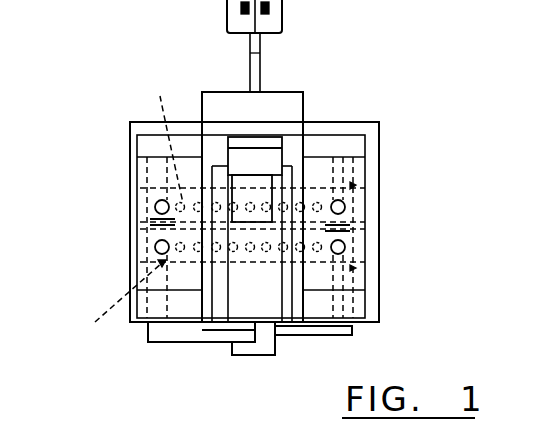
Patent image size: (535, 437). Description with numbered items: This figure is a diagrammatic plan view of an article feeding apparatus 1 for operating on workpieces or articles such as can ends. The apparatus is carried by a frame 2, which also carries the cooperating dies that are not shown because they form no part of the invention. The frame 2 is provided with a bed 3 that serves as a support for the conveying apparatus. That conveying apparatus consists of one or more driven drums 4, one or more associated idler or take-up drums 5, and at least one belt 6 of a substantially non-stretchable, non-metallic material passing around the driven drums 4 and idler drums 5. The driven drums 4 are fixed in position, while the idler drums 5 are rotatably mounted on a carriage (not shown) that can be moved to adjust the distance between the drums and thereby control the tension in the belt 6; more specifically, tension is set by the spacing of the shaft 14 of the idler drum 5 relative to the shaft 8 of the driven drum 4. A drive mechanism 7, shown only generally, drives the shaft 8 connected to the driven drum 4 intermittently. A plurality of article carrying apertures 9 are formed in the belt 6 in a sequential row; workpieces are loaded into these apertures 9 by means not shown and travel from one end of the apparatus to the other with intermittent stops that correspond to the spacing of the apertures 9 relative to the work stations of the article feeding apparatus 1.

The article feeding apparatus 1 is at (97, 230).
The frame 2 is at (270, 308).
The bed 3 is at (355, 143).
The driven drum 4 is at (356, 185).
The idler drum 5 is at (148, 184).
The belt 6 is at (366, 207).
The drive mechanism 7 is at (288, 28).
The shaft 8 is at (340, 162).
The article carrying apertures 9 is at (128, 211).
The shaft 14 is at (150, 163).